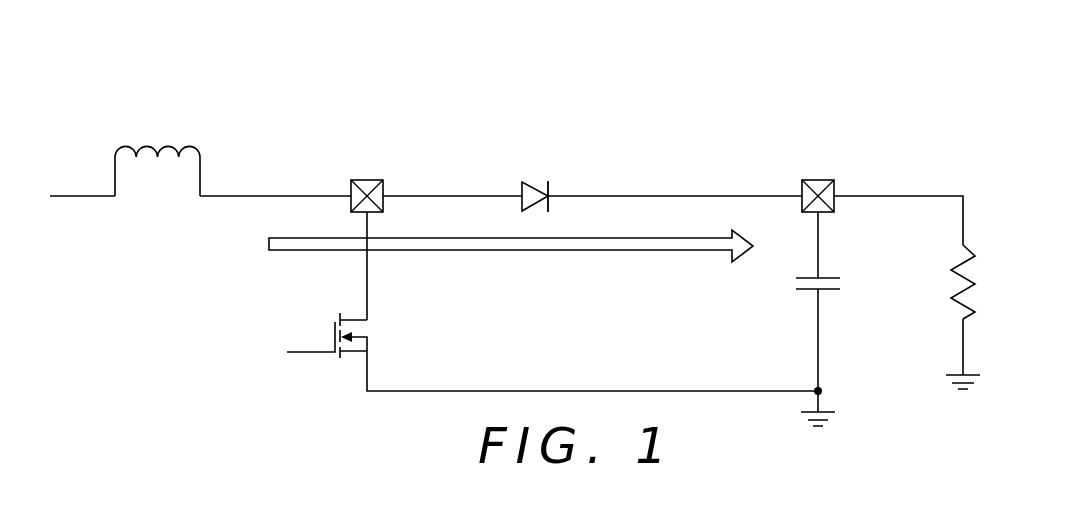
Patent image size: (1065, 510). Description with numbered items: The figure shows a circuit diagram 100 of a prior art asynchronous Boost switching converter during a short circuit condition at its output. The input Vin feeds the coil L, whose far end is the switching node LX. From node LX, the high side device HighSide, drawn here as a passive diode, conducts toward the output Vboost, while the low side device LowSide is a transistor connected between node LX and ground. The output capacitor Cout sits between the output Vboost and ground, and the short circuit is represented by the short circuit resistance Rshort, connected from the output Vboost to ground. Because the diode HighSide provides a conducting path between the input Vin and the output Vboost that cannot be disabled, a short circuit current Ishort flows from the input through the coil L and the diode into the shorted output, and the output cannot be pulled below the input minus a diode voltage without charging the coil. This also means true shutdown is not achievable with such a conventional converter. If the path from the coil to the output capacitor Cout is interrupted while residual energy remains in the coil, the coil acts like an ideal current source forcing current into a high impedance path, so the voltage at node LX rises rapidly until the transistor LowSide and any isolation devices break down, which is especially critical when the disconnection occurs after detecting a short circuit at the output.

The circuit diagram 100 is at (285, 56).
The input Vin is at (82, 182).
The coil L is at (157, 159).
The node LX is at (350, 191).
The High Side HighSide is at (544, 181).
The output Vboost is at (818, 182).
The short circuit resistance Rshort is at (1004, 282).
The output capacitor Cout is at (836, 271).
The short circuit current Ishort is at (511, 255).
The Low Side LowSide is at (382, 335).